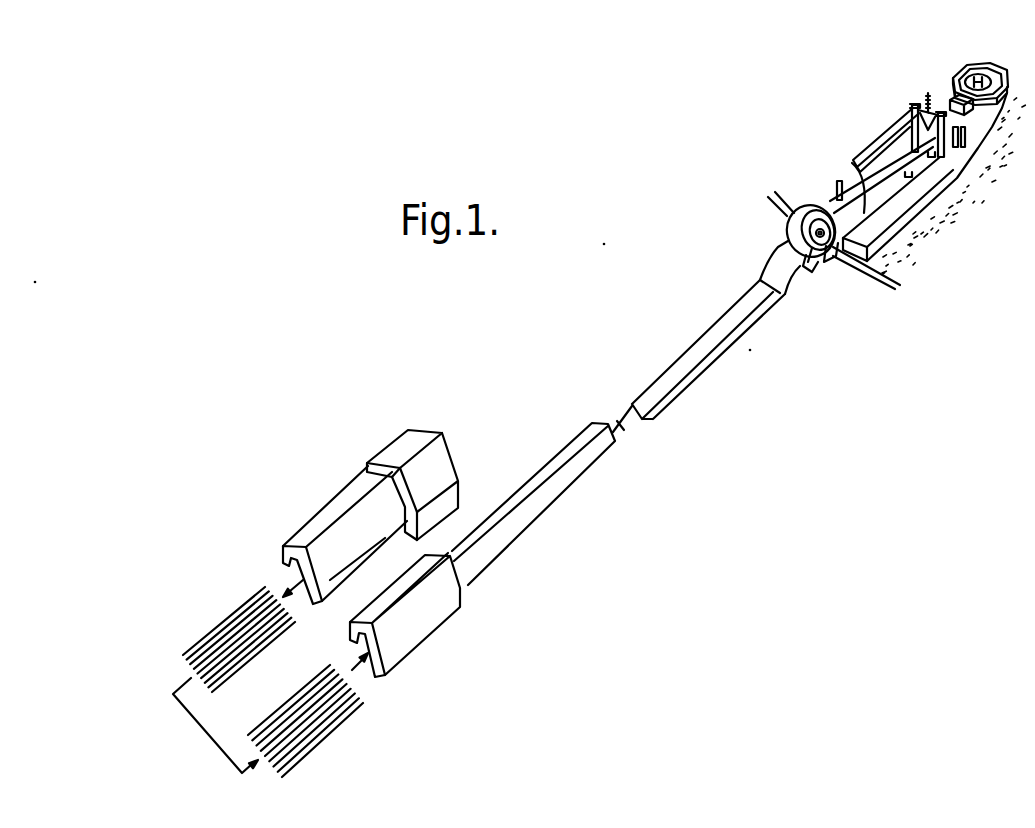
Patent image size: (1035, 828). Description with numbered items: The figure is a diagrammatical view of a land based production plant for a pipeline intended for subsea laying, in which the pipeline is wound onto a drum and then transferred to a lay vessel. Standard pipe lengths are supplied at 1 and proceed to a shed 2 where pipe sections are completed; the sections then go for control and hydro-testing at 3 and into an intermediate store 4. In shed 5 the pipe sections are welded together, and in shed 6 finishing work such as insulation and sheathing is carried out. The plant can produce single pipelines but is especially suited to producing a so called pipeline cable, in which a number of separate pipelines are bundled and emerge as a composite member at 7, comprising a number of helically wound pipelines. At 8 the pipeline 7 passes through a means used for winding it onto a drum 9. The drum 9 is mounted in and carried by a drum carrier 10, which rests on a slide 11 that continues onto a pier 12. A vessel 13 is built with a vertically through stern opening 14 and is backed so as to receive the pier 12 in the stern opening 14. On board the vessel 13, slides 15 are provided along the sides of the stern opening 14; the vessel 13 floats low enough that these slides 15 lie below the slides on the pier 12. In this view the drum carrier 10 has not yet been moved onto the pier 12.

The standard pipe length supply station 1 is at (450, 440).
The shed 2 is at (332, 500).
The control and hydro-testing station 3 is at (185, 733).
The intermediate store 4 is at (355, 741).
The welding shed 5 is at (440, 636).
The finishing shed 6 is at (548, 530).
The pipeline 7 is at (644, 434).
The winding means 8 is at (760, 267).
The drum 9 is at (778, 232).
The drum carrier 10 is at (818, 262).
The slide 11 is at (842, 250).
The pier 12 is at (873, 212).
The vessel 13 is at (884, 114).
The stern opening 14 is at (905, 188).
The slides 15 is at (876, 159).